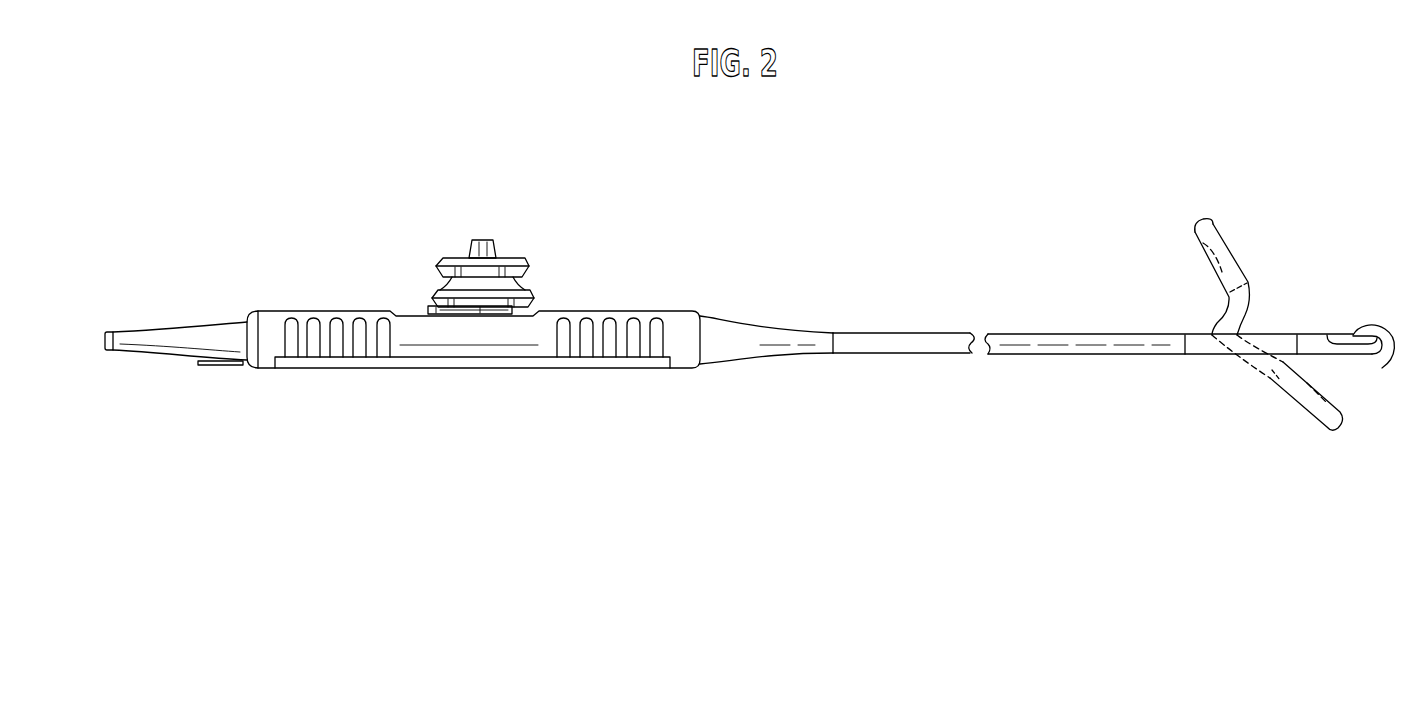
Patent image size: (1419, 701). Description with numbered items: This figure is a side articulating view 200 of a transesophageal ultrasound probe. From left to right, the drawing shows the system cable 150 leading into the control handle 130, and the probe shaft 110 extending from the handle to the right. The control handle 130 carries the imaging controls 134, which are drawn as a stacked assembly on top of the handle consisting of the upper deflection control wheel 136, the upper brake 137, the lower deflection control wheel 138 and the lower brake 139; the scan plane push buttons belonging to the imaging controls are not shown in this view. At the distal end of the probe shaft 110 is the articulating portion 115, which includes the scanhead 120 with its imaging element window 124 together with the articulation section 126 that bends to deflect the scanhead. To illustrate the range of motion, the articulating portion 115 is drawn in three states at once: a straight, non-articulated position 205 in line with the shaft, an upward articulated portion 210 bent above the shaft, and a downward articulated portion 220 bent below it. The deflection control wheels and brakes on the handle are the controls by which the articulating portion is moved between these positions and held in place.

The side articulating view 200 is at (263, 468).
The system cable 150 is at (158, 337).
The control handle 130 is at (690, 385).
The imaging controls 134 is at (435, 202).
The upper deflection control wheel 136 is at (540, 258).
The upper brake 137 is at (468, 250).
The lower deflection control wheel 138 is at (535, 292).
The lower brake 139 is at (428, 308).
The probe shaft 110 is at (1392, 498).
The articulating portion 115 is at (1365, 467).
The articulation section 126 is at (1187, 142).
The upward articulated portion 210 is at (1232, 230).
The downward articulated portion 220 is at (1298, 410).
The scanhead 120 is at (1298, 315).
The imaging element window 124 is at (1392, 357).
The non-articulated position 205 is at (1388, 320).